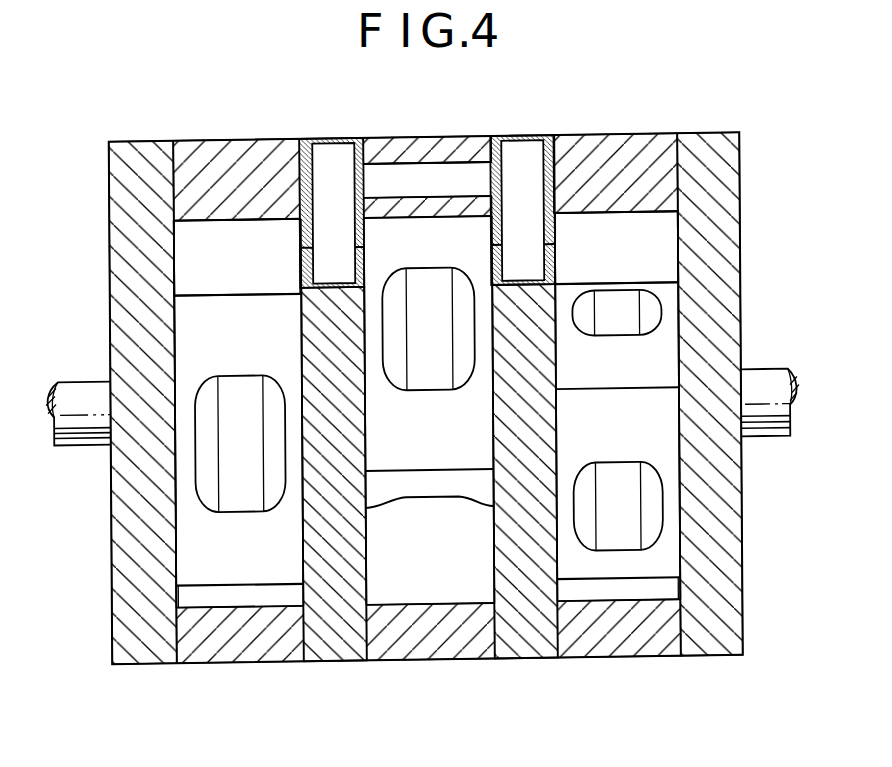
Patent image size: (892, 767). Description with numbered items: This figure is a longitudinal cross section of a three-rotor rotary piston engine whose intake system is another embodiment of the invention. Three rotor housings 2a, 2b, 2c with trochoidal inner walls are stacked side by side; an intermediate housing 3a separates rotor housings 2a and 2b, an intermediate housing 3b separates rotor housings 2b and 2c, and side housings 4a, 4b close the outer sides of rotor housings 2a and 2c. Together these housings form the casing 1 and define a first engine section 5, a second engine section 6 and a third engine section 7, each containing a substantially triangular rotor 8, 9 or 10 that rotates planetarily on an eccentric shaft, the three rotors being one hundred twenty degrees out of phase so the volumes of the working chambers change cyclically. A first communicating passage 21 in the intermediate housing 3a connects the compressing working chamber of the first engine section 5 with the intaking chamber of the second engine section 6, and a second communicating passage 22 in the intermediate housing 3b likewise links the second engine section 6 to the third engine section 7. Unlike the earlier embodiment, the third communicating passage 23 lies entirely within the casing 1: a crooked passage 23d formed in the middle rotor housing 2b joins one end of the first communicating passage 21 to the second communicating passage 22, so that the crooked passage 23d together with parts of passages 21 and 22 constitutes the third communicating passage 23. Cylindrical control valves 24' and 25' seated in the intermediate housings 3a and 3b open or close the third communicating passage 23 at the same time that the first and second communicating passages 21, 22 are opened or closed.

The casing 1 is at (177, 134).
The rotor housing 2a is at (198, 652).
The rotor housing 2b is at (402, 650).
The rotor housing 2c is at (602, 646).
The intermediate housing 3a is at (332, 651).
The intermediate housing 3b is at (532, 639).
The side housing 4a is at (122, 583).
The side housing 4b is at (702, 646).
The first engine section 5 is at (270, 660).
The second engine section 6 is at (453, 660).
The third engine section 7 is at (635, 661).
The rotor 8 is at (189, 526).
The rotor 9 is at (414, 497).
The rotor 10 is at (667, 558).
The first communicating passage 21 is at (301, 261).
The second communicating passage 22 is at (556, 260).
The third communicating passage 23 is at (455, 167).
The crooked passage 23d is at (395, 171).
The cylindrical control valve 24' is at (331, 183).
The cylindrical control valve 25' is at (522, 181).